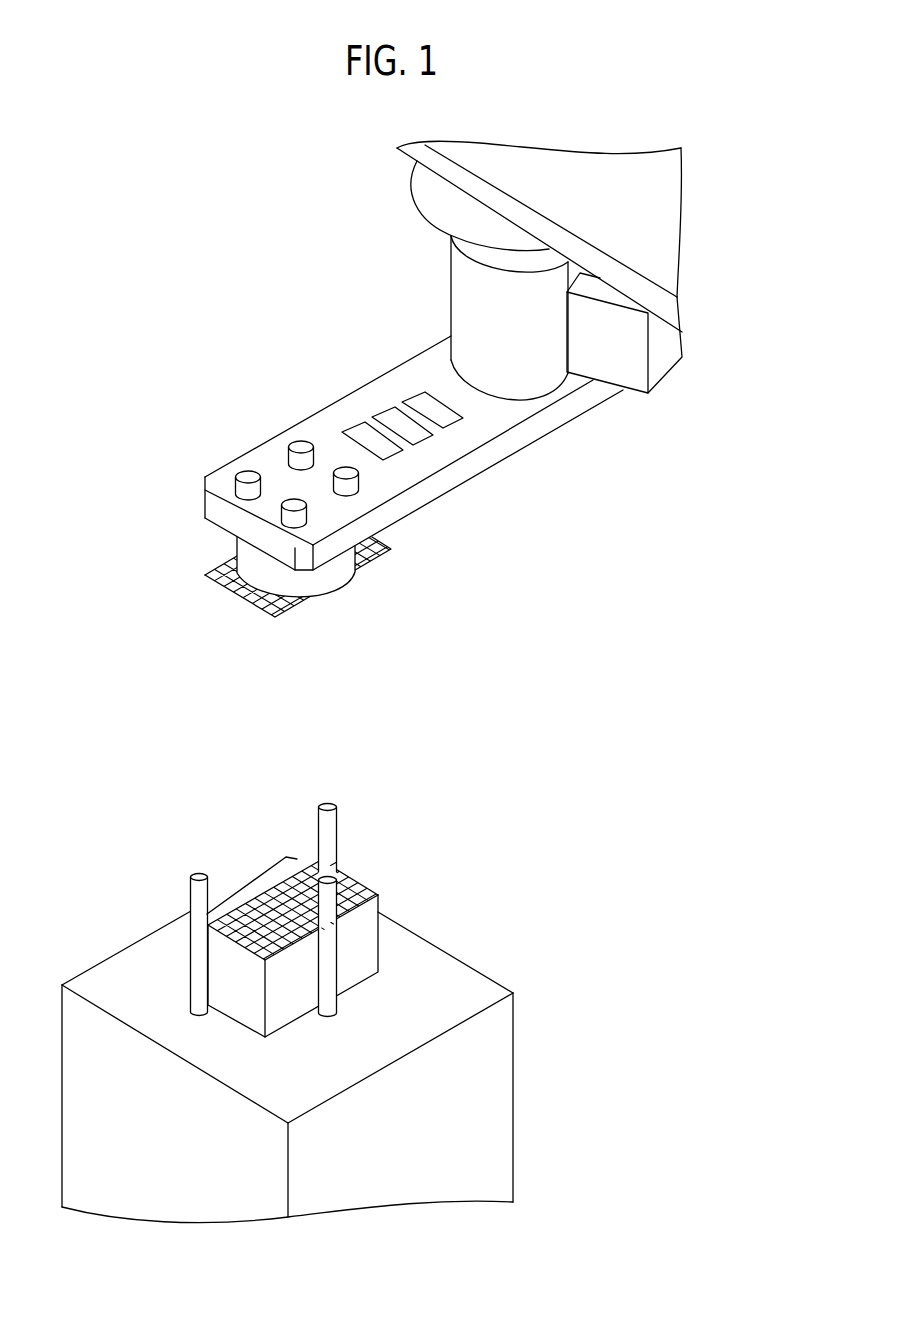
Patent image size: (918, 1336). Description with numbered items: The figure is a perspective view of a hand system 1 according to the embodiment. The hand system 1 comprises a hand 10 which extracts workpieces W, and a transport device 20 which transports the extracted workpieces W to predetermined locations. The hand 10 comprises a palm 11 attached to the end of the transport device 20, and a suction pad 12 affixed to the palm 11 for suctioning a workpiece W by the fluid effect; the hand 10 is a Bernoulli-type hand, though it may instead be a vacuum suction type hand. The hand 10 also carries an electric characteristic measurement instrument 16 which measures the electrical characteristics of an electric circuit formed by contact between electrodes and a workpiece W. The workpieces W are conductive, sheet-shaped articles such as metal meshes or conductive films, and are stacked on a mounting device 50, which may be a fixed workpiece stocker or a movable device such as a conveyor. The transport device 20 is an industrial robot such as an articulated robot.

The hand system 1 is at (89, 249).
The hand 10 is at (312, 363).
The palm 11 is at (493, 422).
The suction pad 12 is at (247, 550).
The electric characteristic measurement instrument 16 is at (400, 420).
The transport device 20 is at (667, 213).
The mounting device 50 is at (443, 983).
The workpiece W is at (378, 552).